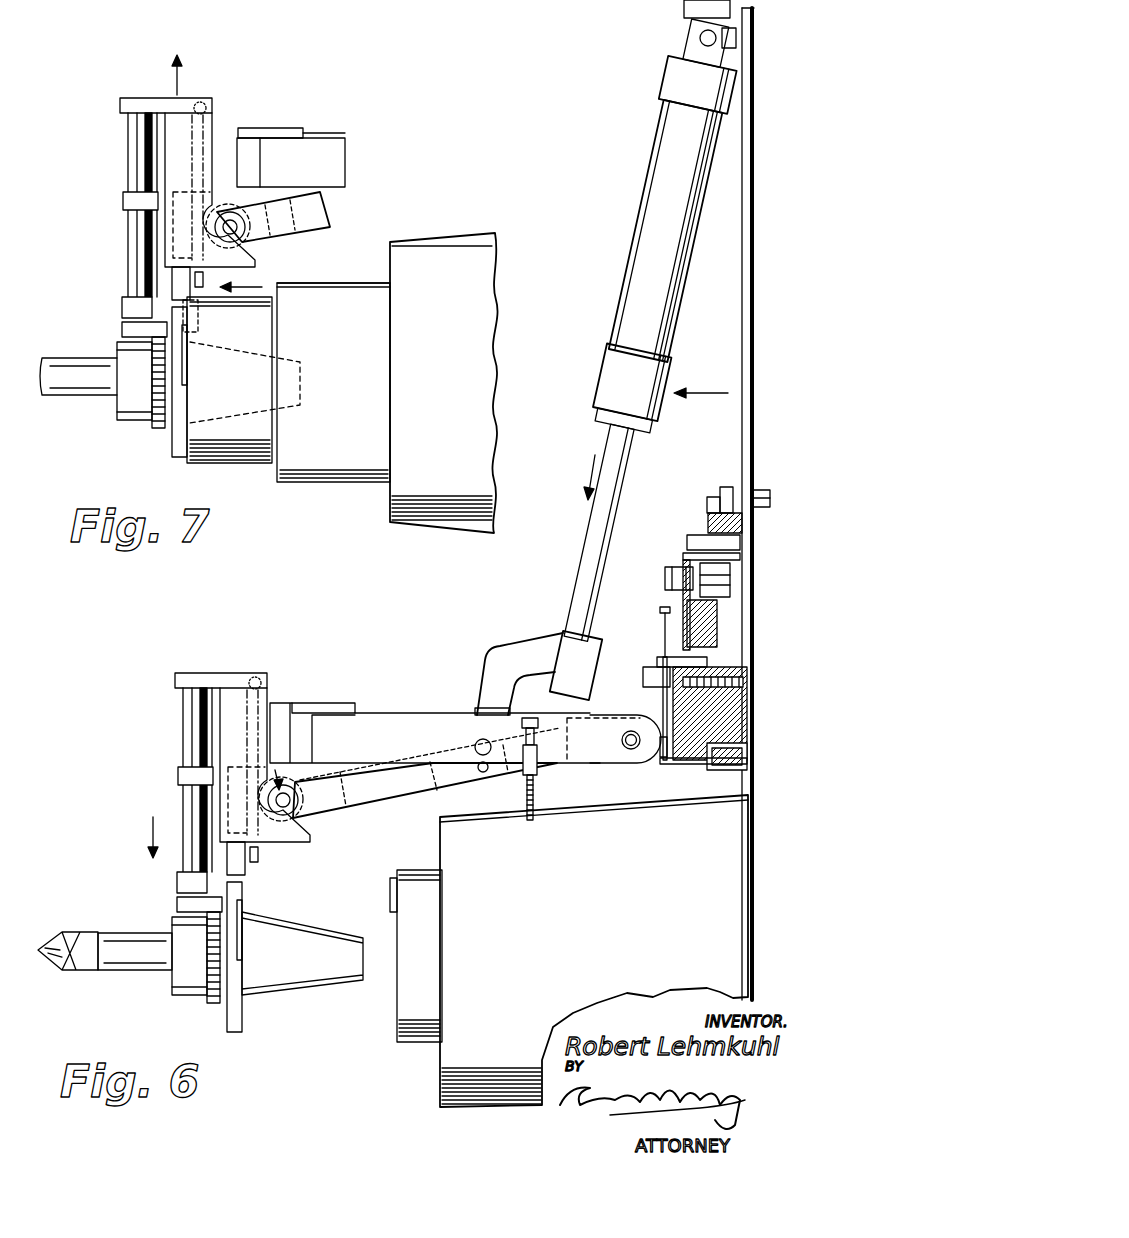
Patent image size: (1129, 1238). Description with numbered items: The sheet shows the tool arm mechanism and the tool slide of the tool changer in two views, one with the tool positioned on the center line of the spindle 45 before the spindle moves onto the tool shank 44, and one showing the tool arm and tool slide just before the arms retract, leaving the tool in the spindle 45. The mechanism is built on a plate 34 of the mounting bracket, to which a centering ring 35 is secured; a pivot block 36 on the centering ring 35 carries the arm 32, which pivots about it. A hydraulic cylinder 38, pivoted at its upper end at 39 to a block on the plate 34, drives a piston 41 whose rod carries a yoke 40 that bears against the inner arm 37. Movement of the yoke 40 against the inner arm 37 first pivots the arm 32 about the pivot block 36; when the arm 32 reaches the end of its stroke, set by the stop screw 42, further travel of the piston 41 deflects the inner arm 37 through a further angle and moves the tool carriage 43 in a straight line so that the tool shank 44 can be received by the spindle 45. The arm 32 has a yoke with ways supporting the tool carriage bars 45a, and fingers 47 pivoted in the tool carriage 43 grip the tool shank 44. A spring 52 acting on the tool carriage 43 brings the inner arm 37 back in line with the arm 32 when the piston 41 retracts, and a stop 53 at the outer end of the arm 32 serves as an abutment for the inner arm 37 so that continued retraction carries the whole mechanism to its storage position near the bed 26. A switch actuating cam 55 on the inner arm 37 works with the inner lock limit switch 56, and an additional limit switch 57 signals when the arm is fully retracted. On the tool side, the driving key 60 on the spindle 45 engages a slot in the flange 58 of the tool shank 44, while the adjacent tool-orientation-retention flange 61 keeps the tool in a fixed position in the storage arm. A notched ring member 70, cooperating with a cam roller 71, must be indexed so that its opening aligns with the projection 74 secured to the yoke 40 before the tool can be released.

In FIG. 7, the bed 26 is at (392, 503).
In FIG. 6, the bed 26 is at (442, 1070).
In FIG. 7, the arm 32 is at (320, 140).
In FIG. 6, the arm 32 is at (388, 703).
In FIG. 7, the plate 34 is at (747, 322).
In FIG. 6, the centering ring 35 is at (735, 702).
In FIG. 6, the pivot block 36 is at (666, 764).
In FIG. 7, the inner arm 37 is at (305, 212).
In FIG. 6, the inner arm 37 is at (378, 790).
In FIG. 7, the hydraulic cylinder 38 is at (660, 215).
In FIG. 7, the pivot 39 is at (700, 38).
In FIG. 6, the yoke 40 is at (505, 647).
In FIG. 7, the piston 41 is at (592, 537).
In FIG. 6, the stop screw 42 is at (525, 797).
In FIG. 7, the tool carriage 43 is at (127, 202).
In FIG. 6, the tool carriage 43 is at (180, 777).
In FIG. 7, the tool shank 44 is at (280, 358).
In FIG. 6, the tool shank 44 is at (290, 935).
In FIG. 7, the spindle 45 is at (232, 462).
In FIG. 6, the spindle 45 is at (400, 1002).
In FIG. 7, the guide bar 45a is at (132, 157).
In FIG. 6, the guide bar 45a is at (183, 734).
In FIG. 7, the fingers 47 is at (175, 372).
In FIG. 6, the fingers 47 is at (223, 940).
In FIG. 7, the spring 52 is at (213, 130).
In FIG. 6, the spring 52 is at (246, 680).
In FIG. 7, the stop 53 is at (280, 128).
In FIG. 6, the stop 53 is at (320, 703).
In FIG. 6, the switch actuating cam 55 is at (655, 720).
In FIG. 6, the limit switch 56 is at (658, 623).
In FIG. 7, the limit switch 57 is at (683, 560).
In FIG. 7, the flange 58 is at (180, 445).
In FIG. 6, the flange 58 is at (243, 1008).
In FIG. 7, the driving key 60 is at (200, 318).
In FIG. 6, the driving key 60 is at (390, 887).
In FIG. 7, the tool-orientation-retention flange 61 is at (158, 382).
In FIG. 6, the tool-orientation-retention flange 61 is at (205, 940).
In FIG. 7, the ring member 70 is at (745, 528).
In FIG. 7, the cam roller 71 is at (727, 487).
In FIG. 6, the projection 74 is at (585, 697).